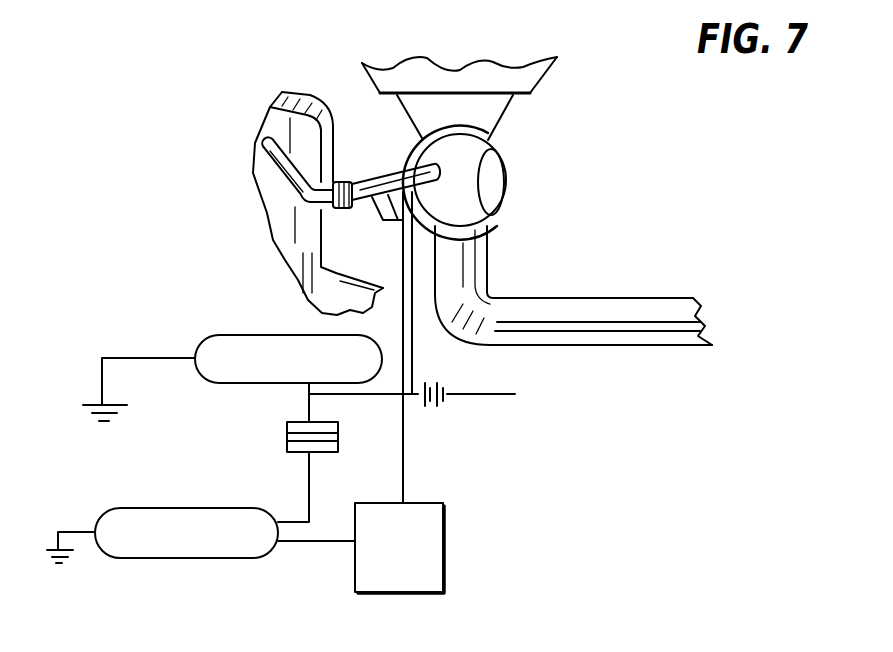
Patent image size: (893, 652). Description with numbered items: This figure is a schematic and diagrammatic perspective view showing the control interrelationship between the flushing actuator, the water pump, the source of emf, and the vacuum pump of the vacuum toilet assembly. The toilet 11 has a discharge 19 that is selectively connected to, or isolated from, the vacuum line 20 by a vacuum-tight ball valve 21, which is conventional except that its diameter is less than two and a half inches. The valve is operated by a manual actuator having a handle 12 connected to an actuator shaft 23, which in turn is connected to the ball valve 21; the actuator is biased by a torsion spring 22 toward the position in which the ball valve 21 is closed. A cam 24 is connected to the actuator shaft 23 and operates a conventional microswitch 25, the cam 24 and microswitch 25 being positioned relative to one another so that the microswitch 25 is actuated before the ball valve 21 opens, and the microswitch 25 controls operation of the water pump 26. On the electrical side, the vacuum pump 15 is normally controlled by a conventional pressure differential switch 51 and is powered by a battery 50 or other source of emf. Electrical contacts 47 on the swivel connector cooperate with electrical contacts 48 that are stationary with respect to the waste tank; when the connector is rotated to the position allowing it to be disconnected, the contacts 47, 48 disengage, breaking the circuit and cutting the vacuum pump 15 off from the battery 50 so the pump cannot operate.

The vacuum toilet 11 is at (560, 56).
The handle 12 is at (264, 215).
The vacuum pump 15 is at (186, 487).
The discharge 19 is at (495, 103).
The vacuum line 20 is at (572, 304).
The ball valve 21 is at (550, 191).
The torsion spring 22 is at (347, 168).
The actuator shaft 23 is at (371, 183).
The cam 24 is at (372, 204).
The microswitch 25 is at (398, 224).
The water pump 26 is at (199, 370).
The electrical contacts 47 is at (339, 459).
The electrical contacts 48 is at (320, 433).
The battery 50 is at (452, 402).
The pressure differential switch 51 is at (434, 522).